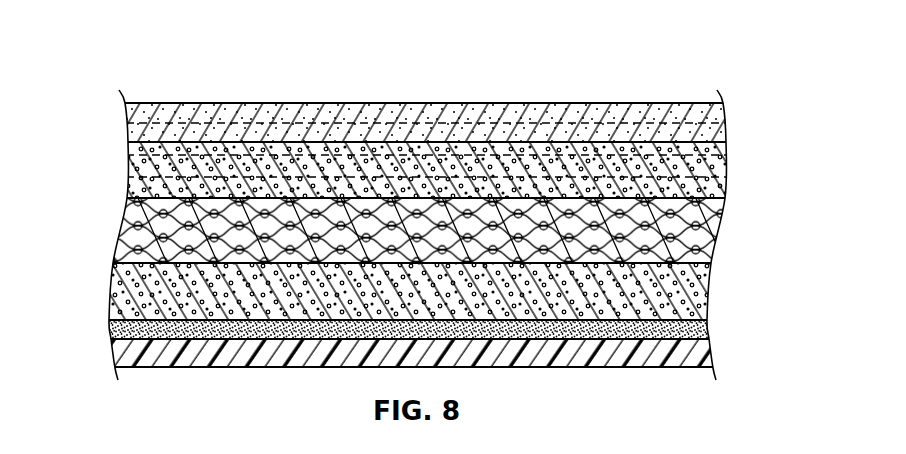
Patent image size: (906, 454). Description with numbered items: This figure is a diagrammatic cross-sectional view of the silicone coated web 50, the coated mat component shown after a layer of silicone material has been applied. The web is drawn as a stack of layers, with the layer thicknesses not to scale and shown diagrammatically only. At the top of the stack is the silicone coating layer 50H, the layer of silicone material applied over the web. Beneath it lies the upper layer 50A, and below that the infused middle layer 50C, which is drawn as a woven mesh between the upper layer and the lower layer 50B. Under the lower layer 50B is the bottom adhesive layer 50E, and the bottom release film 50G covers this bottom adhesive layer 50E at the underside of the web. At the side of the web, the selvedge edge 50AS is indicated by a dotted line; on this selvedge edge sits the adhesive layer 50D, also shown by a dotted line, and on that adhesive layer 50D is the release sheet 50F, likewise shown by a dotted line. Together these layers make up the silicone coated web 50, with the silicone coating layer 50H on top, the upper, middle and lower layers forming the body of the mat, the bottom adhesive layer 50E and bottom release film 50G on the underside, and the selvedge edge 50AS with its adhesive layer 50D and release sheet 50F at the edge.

The silicone coated web 50 is at (167, 96).
The silicone coating layer 50H is at (152, 112).
The upper layer 50A is at (155, 168).
The selvedge edge 50AS is at (722, 163).
The adhesive layer 50D is at (655, 170).
The release sheet 50F is at (720, 109).
The infused middle layer 50C is at (140, 238).
The lower layer 50B is at (135, 297).
The bottom adhesive layer 50E is at (130, 327).
The bottom release film 50G is at (130, 353).